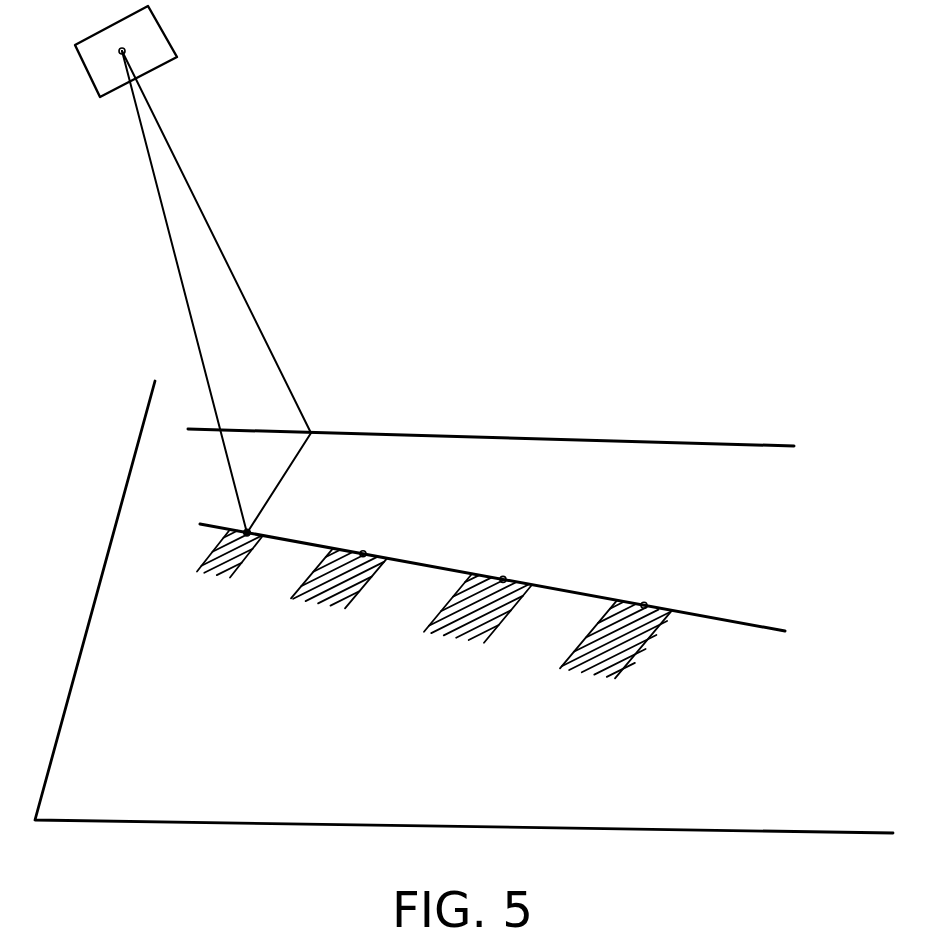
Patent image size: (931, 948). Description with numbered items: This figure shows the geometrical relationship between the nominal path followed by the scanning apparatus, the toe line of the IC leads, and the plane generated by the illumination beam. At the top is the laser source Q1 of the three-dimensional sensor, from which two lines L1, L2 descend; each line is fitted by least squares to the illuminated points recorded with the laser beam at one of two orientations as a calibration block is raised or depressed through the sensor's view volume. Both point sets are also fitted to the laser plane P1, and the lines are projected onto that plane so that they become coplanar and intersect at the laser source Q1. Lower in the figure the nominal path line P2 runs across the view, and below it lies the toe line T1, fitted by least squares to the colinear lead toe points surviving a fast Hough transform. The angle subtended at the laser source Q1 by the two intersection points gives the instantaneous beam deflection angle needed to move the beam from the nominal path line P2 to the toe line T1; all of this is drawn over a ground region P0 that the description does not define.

The laser source Q1 is at (166, 51).
The first 3-D line L1 is at (163, 255).
The second 3-D line L2 is at (236, 240).
The laser plane P1 is at (291, 388).
The nominal path line P2 is at (491, 430).
The toe line T1 is at (491, 601).
The reference ground plane P0 is at (576, 779).